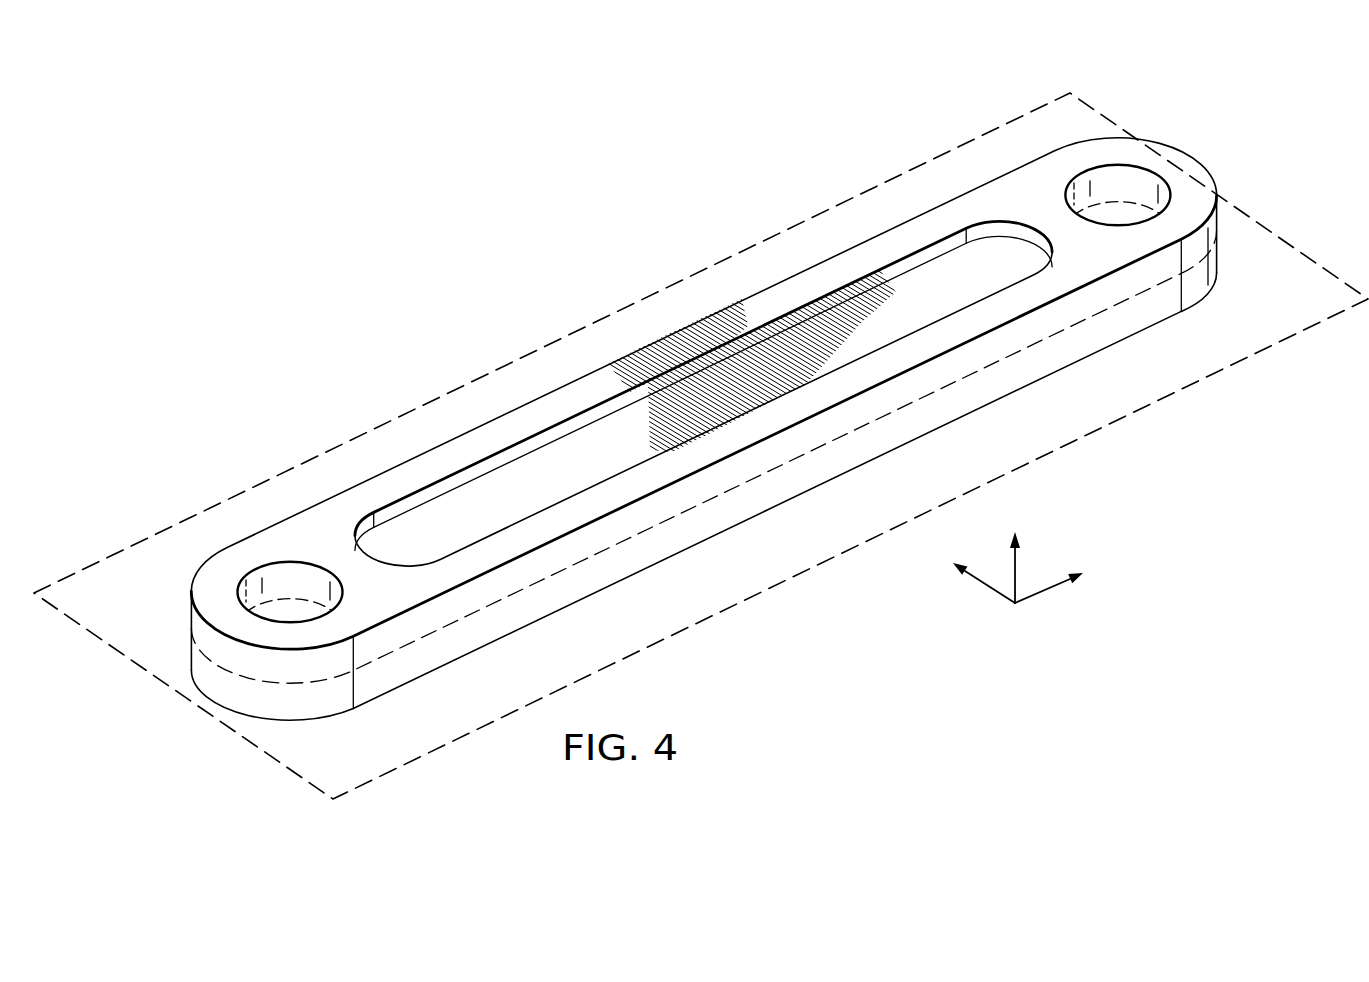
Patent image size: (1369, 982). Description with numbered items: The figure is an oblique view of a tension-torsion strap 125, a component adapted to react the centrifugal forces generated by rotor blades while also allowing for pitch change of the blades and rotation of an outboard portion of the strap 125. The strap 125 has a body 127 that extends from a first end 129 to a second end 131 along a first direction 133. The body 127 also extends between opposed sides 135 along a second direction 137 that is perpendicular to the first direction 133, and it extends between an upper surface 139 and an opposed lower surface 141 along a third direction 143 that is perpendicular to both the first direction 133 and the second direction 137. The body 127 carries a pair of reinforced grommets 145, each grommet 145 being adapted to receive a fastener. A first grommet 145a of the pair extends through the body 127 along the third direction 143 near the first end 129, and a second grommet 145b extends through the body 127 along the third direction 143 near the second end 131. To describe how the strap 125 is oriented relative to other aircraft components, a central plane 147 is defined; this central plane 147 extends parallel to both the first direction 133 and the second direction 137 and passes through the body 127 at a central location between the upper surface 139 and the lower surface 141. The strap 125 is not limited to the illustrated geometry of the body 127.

The tension-torsion strap 125 is at (326, 230).
The body 127 is at (890, 242).
The first end 129 is at (223, 622).
The second end 131 is at (1185, 162).
The first direction 133 is at (1045, 597).
The opposed sides 135 is at (573, 377).
The second direction 137 is at (988, 590).
The upper surface 139 is at (443, 463).
The lower surface 141 is at (431, 670).
The third direction 143 is at (1017, 565).
The reinforced grommet 145 is at (305, 583).
The first grommet 145a is at (265, 565).
The second grommet 145b is at (1128, 178).
The central plane 147 is at (675, 633).